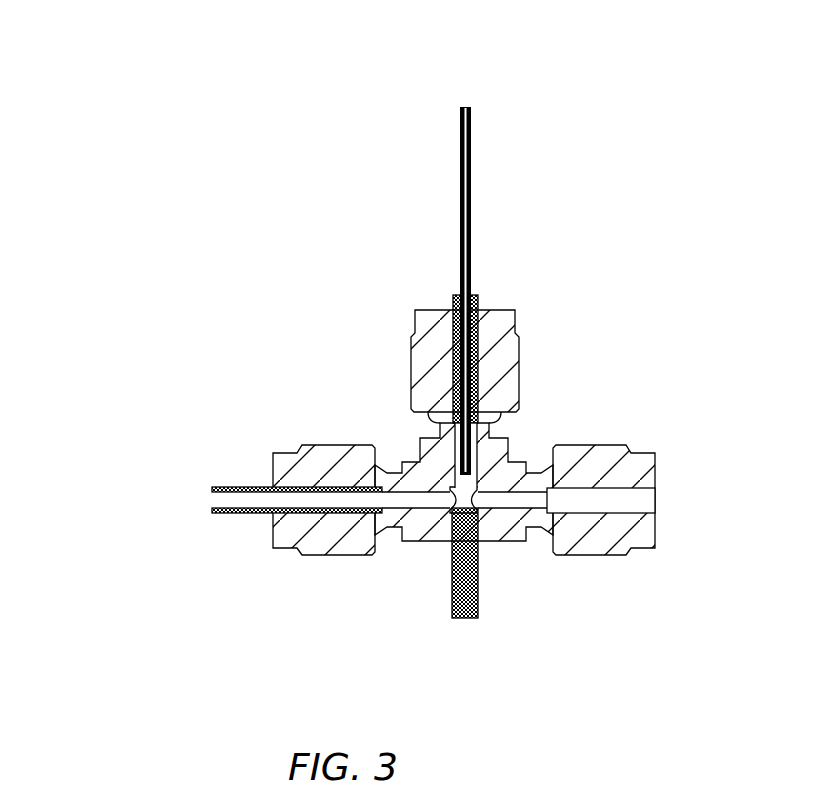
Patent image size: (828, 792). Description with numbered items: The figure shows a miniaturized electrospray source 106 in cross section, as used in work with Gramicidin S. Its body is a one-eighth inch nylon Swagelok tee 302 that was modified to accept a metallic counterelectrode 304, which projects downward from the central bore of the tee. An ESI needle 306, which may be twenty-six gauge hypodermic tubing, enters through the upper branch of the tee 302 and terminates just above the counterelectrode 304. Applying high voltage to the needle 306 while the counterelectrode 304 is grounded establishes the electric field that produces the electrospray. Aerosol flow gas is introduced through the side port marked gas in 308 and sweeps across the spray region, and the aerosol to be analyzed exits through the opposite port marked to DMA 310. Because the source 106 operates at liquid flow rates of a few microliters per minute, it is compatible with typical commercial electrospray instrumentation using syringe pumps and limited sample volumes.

The miniaturized electrospray source 106 is at (173, 195).
The nylon Swagelok tee 302 is at (398, 463).
The metallic counterelectrode 304 is at (461, 594).
The ESI needle 306 is at (458, 230).
The gas in 308 is at (609, 424).
The to DMA 310 is at (245, 499).